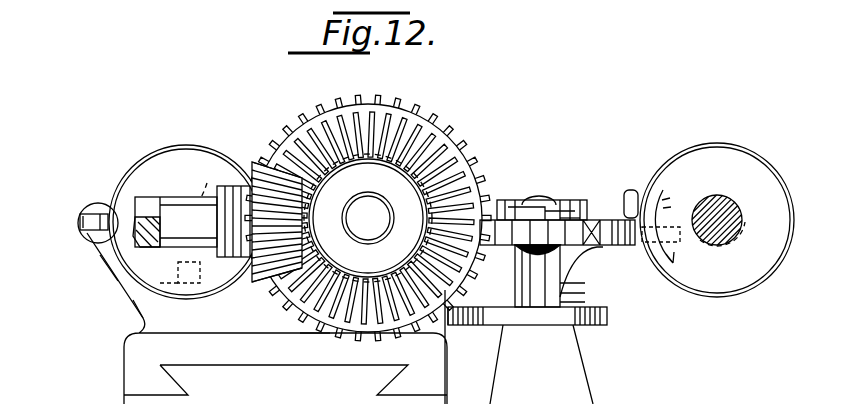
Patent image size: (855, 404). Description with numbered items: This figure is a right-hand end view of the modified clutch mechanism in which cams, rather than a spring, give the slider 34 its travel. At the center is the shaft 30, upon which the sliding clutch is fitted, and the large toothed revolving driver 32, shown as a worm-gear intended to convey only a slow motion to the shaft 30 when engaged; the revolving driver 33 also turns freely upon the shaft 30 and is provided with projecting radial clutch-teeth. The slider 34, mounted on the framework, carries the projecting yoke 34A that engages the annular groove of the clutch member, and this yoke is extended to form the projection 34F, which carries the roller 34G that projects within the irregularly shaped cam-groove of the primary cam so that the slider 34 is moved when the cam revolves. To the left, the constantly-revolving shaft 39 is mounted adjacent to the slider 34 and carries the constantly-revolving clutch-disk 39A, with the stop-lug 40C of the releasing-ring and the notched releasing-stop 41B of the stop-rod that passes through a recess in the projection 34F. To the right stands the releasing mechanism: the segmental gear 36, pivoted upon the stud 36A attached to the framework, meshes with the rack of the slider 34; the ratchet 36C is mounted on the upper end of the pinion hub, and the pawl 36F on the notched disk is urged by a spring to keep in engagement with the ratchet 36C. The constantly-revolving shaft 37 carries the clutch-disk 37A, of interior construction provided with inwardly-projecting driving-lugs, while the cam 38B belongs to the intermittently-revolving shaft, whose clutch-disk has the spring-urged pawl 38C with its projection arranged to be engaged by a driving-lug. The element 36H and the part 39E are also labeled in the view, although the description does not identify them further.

The shaft 30 is at (368, 216).
The revolving driver 32 is at (412, 118).
The revolving driver 33 is at (368, 218).
The slider 34 is at (206, 350).
The projecting yoke 34A is at (312, 292).
The projection 34F is at (117, 260).
The roller 34G is at (150, 297).
The segmental gear 36 is at (525, 325).
The stud 36A is at (548, 203).
The ratchet 36C is at (560, 218).
The pawl 36F is at (520, 205).
The bracket flare 36H is at (592, 255).
The constantly-revolving shaft 37 is at (723, 213).
The clutch-disk 37A is at (721, 132).
The cam 38B is at (547, 277).
The pawl 38C is at (636, 190).
The constantly-revolving shaft 39 is at (222, 165).
The constantly-revolving clutch-disk 39A is at (187, 187).
The flange 39E is at (453, 326).
The stop-lug 40C is at (108, 216).
The notched releasing-stop 41B is at (92, 220).